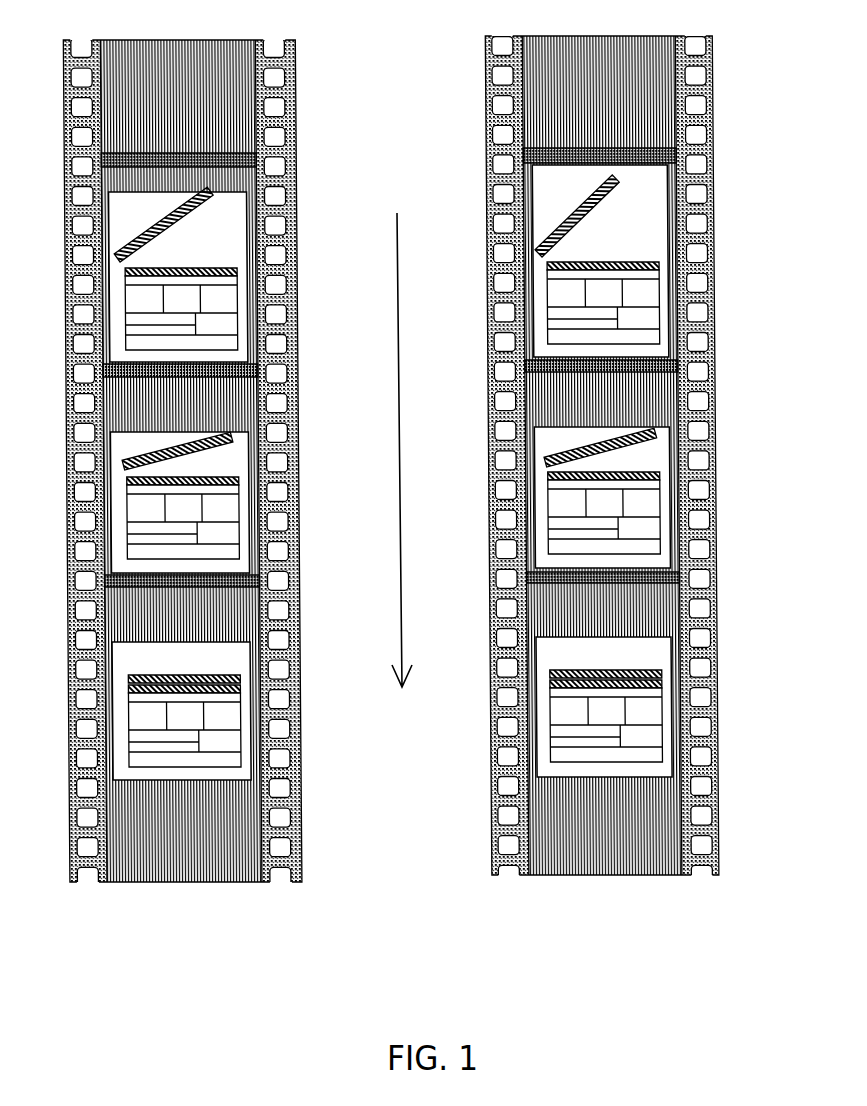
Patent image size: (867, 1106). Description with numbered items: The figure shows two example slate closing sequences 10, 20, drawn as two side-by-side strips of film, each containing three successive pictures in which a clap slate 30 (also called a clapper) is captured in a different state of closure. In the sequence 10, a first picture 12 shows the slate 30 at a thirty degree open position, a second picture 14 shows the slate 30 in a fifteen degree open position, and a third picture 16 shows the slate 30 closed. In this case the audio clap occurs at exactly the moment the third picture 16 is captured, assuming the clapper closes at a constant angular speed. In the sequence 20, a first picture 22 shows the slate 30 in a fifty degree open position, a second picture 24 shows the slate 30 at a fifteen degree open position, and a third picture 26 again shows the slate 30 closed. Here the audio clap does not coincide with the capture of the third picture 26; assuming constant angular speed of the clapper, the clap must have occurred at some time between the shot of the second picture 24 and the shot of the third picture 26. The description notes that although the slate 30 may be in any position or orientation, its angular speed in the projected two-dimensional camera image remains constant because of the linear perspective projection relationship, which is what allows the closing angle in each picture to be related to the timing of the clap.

The slate closing sequence 10 is at (312, 75).
The slate closing sequence 20 is at (740, 75).
The first picture 12 is at (250, 280).
The second picture 14 is at (252, 492).
The third picture 16 is at (255, 715).
The first picture 22 is at (673, 275).
The second picture 24 is at (673, 493).
The third picture 26 is at (673, 695).
The slate 30 is at (158, 232).